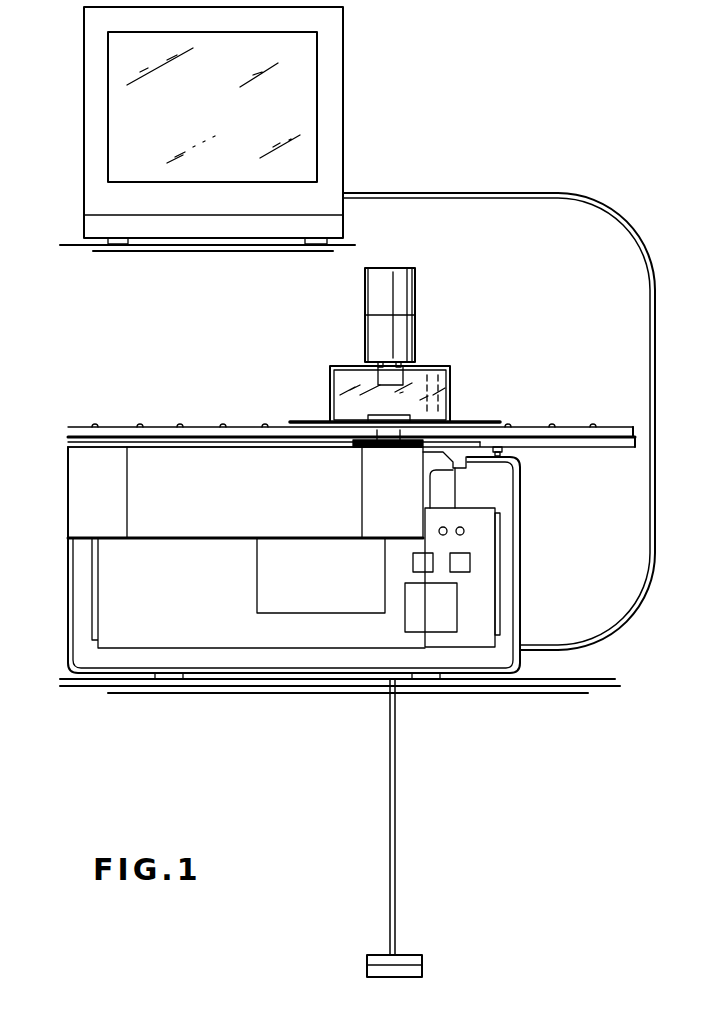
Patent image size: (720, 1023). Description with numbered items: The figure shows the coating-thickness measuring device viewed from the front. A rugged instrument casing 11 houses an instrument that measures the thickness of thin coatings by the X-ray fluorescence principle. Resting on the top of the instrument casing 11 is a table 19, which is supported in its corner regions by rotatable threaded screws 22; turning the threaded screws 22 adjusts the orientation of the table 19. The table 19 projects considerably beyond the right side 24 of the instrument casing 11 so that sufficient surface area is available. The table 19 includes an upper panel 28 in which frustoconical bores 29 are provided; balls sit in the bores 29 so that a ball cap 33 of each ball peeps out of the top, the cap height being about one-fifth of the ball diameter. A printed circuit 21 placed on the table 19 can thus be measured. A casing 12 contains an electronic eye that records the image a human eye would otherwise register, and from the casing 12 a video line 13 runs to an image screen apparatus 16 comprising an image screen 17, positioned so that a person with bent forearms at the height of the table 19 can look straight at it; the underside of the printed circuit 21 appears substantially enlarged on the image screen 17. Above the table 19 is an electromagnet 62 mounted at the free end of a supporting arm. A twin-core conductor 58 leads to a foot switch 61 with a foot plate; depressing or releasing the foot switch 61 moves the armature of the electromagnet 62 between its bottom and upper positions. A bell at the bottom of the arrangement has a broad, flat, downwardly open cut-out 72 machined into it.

The instrument casing 11 is at (68, 574).
The casing 12 is at (200, 517).
The video line 13 is at (605, 635).
The image screen apparatus 16 is at (343, 53).
The image screen 17 is at (303, 107).
The table 19 is at (635, 439).
The printed circuit 21 is at (487, 422).
The threaded screws 22 is at (505, 450).
The right side of the instrument casing 24 is at (520, 553).
The upper panel 28 is at (583, 432).
The frustoconical bores 29 is at (593, 442).
The ball cap 33 is at (223, 427).
The conductor 58 is at (395, 823).
The foot switch 61 is at (422, 972).
The electromagnet 62 is at (415, 293).
The cut-out 72 is at (372, 413).